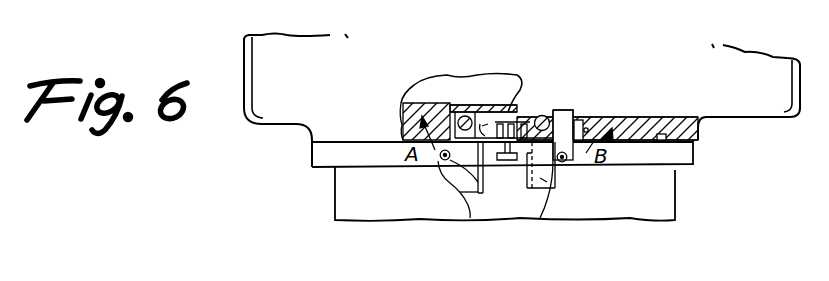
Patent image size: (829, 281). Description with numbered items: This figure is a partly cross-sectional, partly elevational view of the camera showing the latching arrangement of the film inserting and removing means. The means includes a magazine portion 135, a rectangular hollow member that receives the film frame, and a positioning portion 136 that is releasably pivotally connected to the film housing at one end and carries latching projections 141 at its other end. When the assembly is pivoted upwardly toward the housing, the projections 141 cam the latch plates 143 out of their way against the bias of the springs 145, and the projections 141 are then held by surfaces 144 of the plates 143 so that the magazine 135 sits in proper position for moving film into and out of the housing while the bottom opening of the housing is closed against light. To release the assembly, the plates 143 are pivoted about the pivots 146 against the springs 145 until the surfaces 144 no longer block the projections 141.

The magazine portion 135 is at (632, 210).
The positioning portion 136 is at (697, 153).
The latching projections 141 is at (437, 183).
The latch plates 143 is at (462, 212).
The surfaces 144 is at (580, 108).
The springs 145 is at (520, 113).
The pivots 146 is at (466, 120).